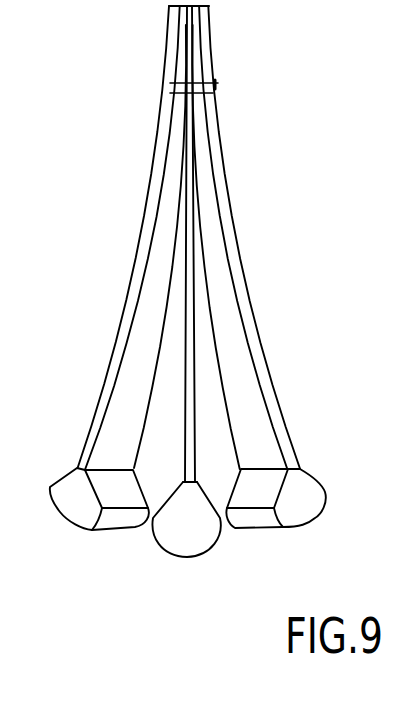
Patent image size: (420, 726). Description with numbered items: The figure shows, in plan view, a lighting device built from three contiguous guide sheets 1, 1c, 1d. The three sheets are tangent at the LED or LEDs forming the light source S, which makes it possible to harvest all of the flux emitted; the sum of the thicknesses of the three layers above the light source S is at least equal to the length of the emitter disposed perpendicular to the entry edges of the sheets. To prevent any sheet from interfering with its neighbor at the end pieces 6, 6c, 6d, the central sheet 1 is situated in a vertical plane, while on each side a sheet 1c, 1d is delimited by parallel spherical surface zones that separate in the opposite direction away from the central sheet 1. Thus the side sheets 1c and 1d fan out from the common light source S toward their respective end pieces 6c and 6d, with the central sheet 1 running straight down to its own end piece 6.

The central guide sheet 1 is at (190, 311).
The guide sheet 1c is at (237, 257).
The guide sheet 1d is at (142, 239).
The end piece 6 is at (185, 540).
The end piece 6c is at (303, 510).
The end piece 6d is at (72, 515).
The light source S is at (218, 82).